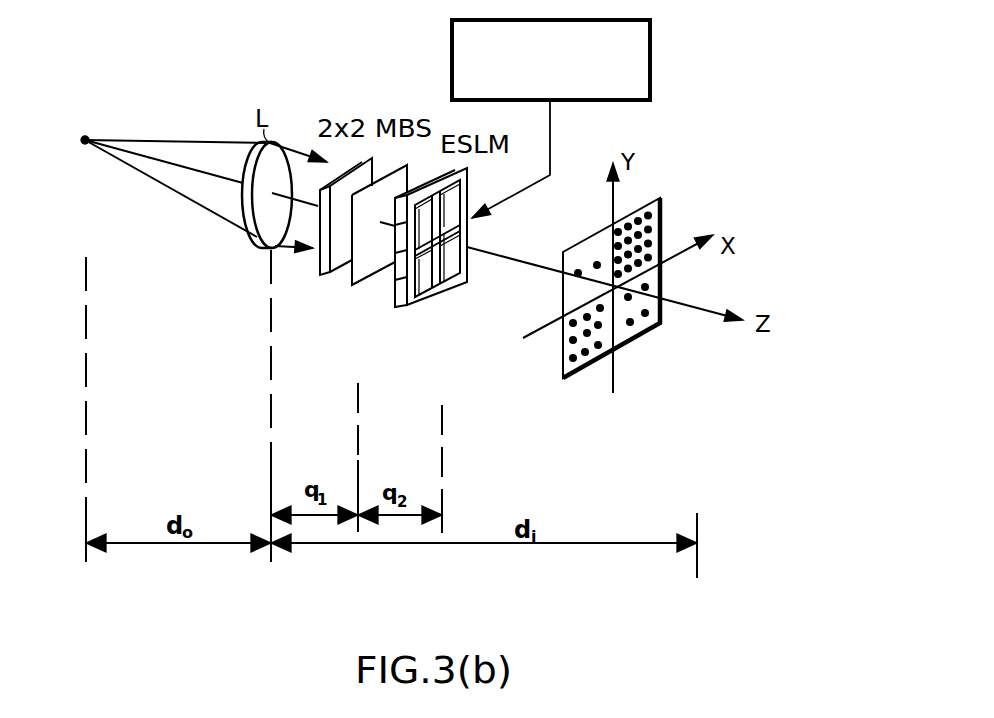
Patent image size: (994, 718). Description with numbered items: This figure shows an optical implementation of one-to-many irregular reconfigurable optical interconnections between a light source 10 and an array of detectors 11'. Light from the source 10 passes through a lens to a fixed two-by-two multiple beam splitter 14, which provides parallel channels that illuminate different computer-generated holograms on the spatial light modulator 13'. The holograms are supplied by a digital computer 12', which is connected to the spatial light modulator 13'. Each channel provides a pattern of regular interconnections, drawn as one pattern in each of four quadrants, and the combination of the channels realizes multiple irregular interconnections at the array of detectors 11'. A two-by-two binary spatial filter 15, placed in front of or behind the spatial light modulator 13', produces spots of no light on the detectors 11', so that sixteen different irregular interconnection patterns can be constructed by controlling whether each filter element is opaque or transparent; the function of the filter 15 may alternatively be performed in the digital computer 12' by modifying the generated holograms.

The light source 10 is at (84, 144).
The digital computer 12' is at (521, 60).
The multiple beam splitter (MBS) 14 is at (320, 276).
The binary spatial filter 15 is at (372, 284).
The spatial light modulator 13' is at (431, 265).
The array of detectors 11' is at (696, 326).